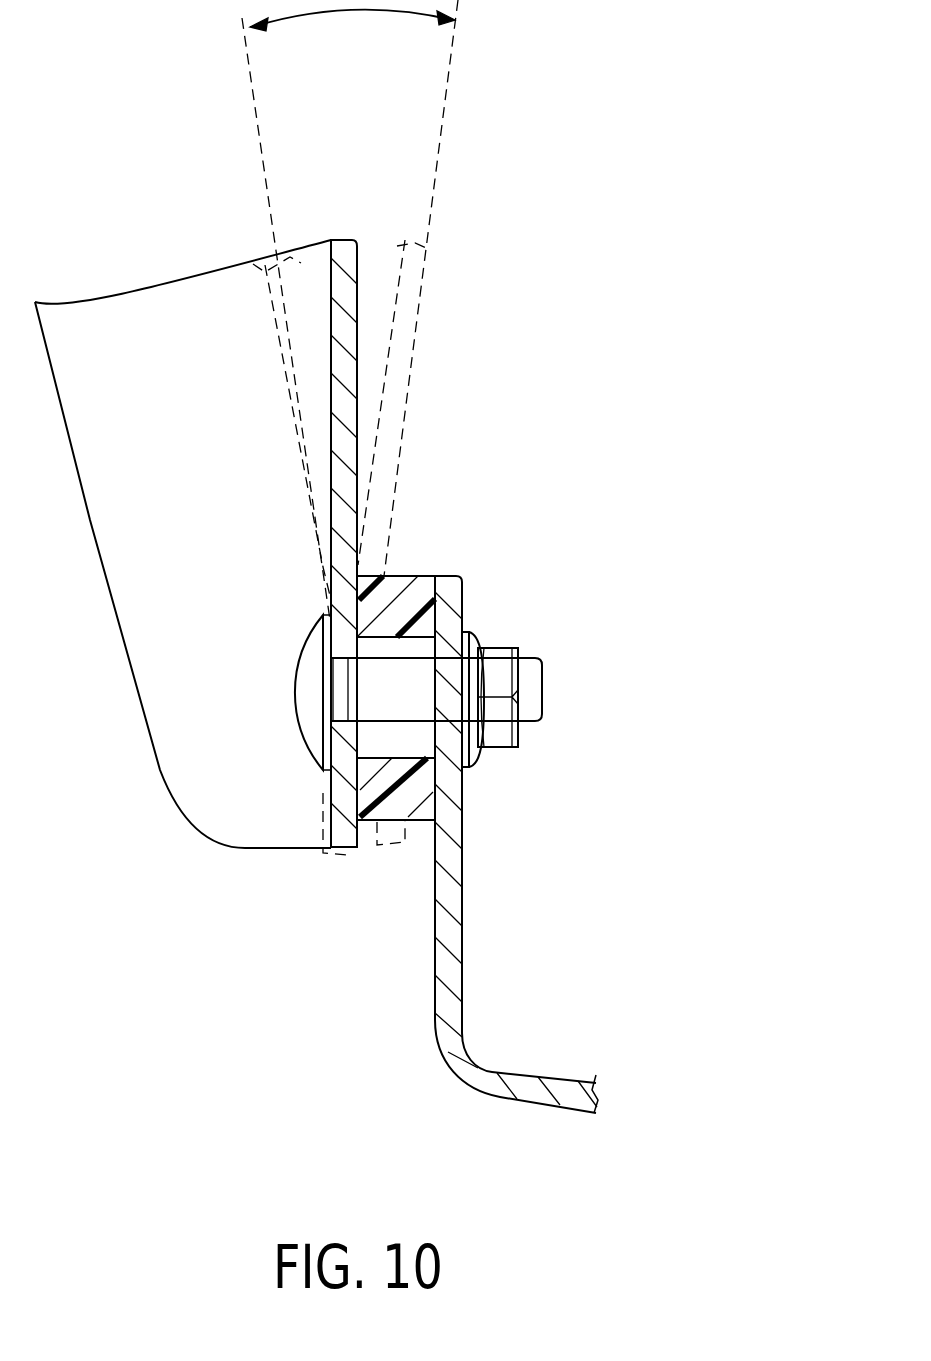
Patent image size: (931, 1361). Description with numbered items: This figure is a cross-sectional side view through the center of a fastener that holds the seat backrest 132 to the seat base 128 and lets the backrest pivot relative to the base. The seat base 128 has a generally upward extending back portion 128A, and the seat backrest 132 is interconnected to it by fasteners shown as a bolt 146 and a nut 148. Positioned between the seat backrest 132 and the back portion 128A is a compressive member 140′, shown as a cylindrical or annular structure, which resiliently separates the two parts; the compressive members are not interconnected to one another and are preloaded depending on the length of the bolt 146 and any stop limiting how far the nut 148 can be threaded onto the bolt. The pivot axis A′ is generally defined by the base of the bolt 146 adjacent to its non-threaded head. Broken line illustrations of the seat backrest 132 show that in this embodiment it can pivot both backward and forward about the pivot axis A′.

The seat backrest 132 is at (290, 257).
The compressive member 140′ is at (420, 590).
The bolt 146 is at (298, 670).
The pivot axis A′ is at (300, 735).
The nut 148 is at (503, 648).
The back portion of the seat base 128A is at (447, 863).
The seat base 128 is at (537, 1103).